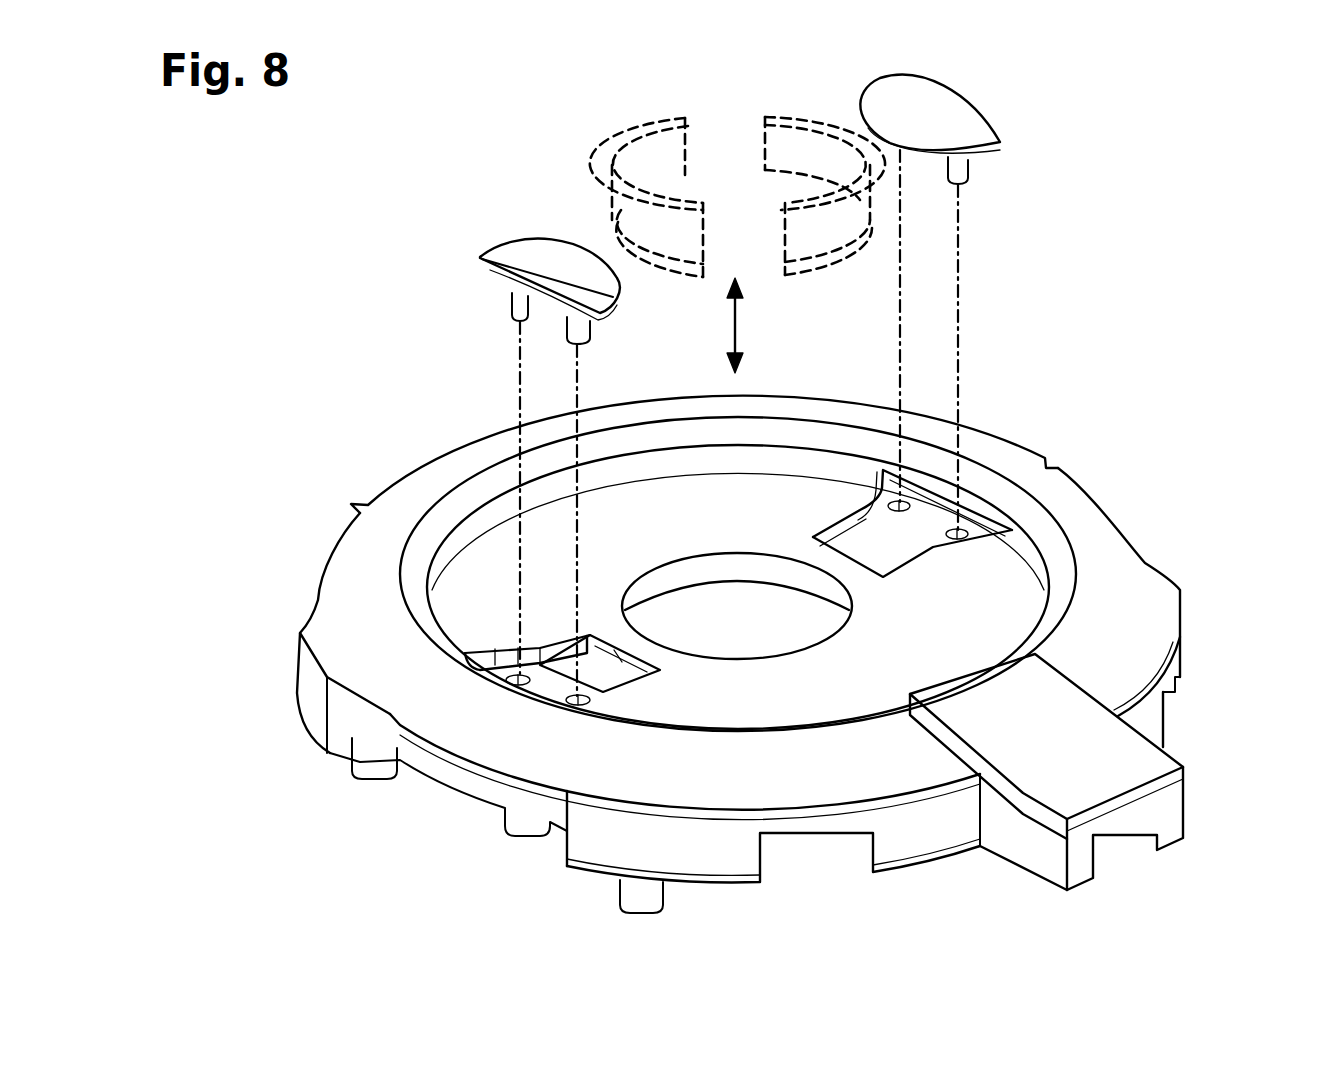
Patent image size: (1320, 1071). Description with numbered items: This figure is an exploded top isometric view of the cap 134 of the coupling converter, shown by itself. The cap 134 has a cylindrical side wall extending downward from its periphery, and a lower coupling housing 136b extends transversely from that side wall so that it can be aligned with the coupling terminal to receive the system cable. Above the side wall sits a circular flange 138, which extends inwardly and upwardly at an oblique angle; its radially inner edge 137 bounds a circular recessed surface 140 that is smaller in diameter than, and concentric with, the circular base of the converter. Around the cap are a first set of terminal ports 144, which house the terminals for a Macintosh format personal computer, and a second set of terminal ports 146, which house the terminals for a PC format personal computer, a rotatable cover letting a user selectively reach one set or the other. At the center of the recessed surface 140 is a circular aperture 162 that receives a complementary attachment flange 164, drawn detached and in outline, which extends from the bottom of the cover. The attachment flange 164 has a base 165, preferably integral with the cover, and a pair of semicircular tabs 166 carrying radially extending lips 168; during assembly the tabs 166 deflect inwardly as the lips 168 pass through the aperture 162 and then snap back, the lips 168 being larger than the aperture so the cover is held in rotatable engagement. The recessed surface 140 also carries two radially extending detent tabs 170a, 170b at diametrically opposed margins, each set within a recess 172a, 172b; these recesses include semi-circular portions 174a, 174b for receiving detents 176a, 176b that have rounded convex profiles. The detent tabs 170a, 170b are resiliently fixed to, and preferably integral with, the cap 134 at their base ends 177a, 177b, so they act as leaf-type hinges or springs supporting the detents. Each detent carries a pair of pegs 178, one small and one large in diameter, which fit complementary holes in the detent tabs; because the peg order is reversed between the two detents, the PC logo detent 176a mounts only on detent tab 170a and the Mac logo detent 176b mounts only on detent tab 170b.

The cap 134 is at (1190, 598).
The lower coupling housing 136b is at (1155, 772).
The radially inner edge 137 is at (1033, 530).
The circular flange 138 is at (330, 662).
The recessed surface 140 is at (752, 462).
The first set of terminal ports 144 is at (500, 808).
The second set of terminal ports 146 is at (1182, 688).
The circular aperture 162 is at (760, 628).
The attachment flange 164 is at (724, 184).
The base 165 is at (655, 122).
The semicircular tabs 166 is at (785, 143).
The radially extending lips 168 is at (660, 266).
The detent tab 170a is at (883, 514).
The detent tab 170b is at (591, 649).
The recess 172a is at (882, 486).
The recess 172b is at (560, 640).
The semi-circular portion 174a is at (973, 548).
The semi-circular portion 174b is at (600, 706).
The detent 176a is at (953, 120).
The detent 176b is at (535, 253).
The base end 177a is at (622, 662).
The base end 177b is at (840, 514).
The pegs 178 is at (511, 306).